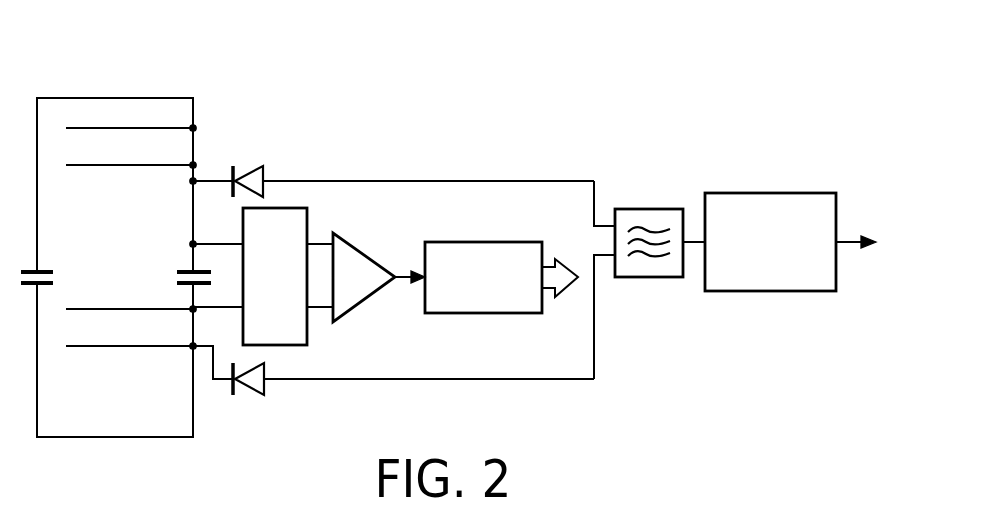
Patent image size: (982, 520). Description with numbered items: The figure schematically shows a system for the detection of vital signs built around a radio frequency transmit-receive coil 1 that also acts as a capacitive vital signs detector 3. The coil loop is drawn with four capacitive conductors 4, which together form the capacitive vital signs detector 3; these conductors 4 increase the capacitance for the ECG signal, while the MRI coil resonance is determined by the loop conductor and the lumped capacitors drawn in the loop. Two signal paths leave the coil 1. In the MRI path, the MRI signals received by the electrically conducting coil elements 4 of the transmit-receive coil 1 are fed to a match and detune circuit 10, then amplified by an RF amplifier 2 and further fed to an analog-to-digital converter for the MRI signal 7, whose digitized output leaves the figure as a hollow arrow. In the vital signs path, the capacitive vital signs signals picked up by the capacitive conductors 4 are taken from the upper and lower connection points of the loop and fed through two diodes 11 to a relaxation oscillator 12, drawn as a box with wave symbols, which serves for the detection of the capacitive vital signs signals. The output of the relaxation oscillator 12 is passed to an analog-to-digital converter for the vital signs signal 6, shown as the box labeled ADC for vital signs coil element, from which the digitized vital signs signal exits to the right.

The radio frequency (RF) transmit-receive coil 1 is at (94, 66).
The RF amplifier 2 is at (358, 305).
The capacitive vital signs detector 3 is at (86, 397).
The electrically conducting coil element 4 is at (153, 165).
The ADC for vital signs signal 6 is at (770, 193).
The ADC for MRI signal 7 is at (483, 313).
The match and detune circuit 10 is at (290, 208).
The diode 11 is at (250, 165).
The relaxation oscillator 12 is at (650, 209).